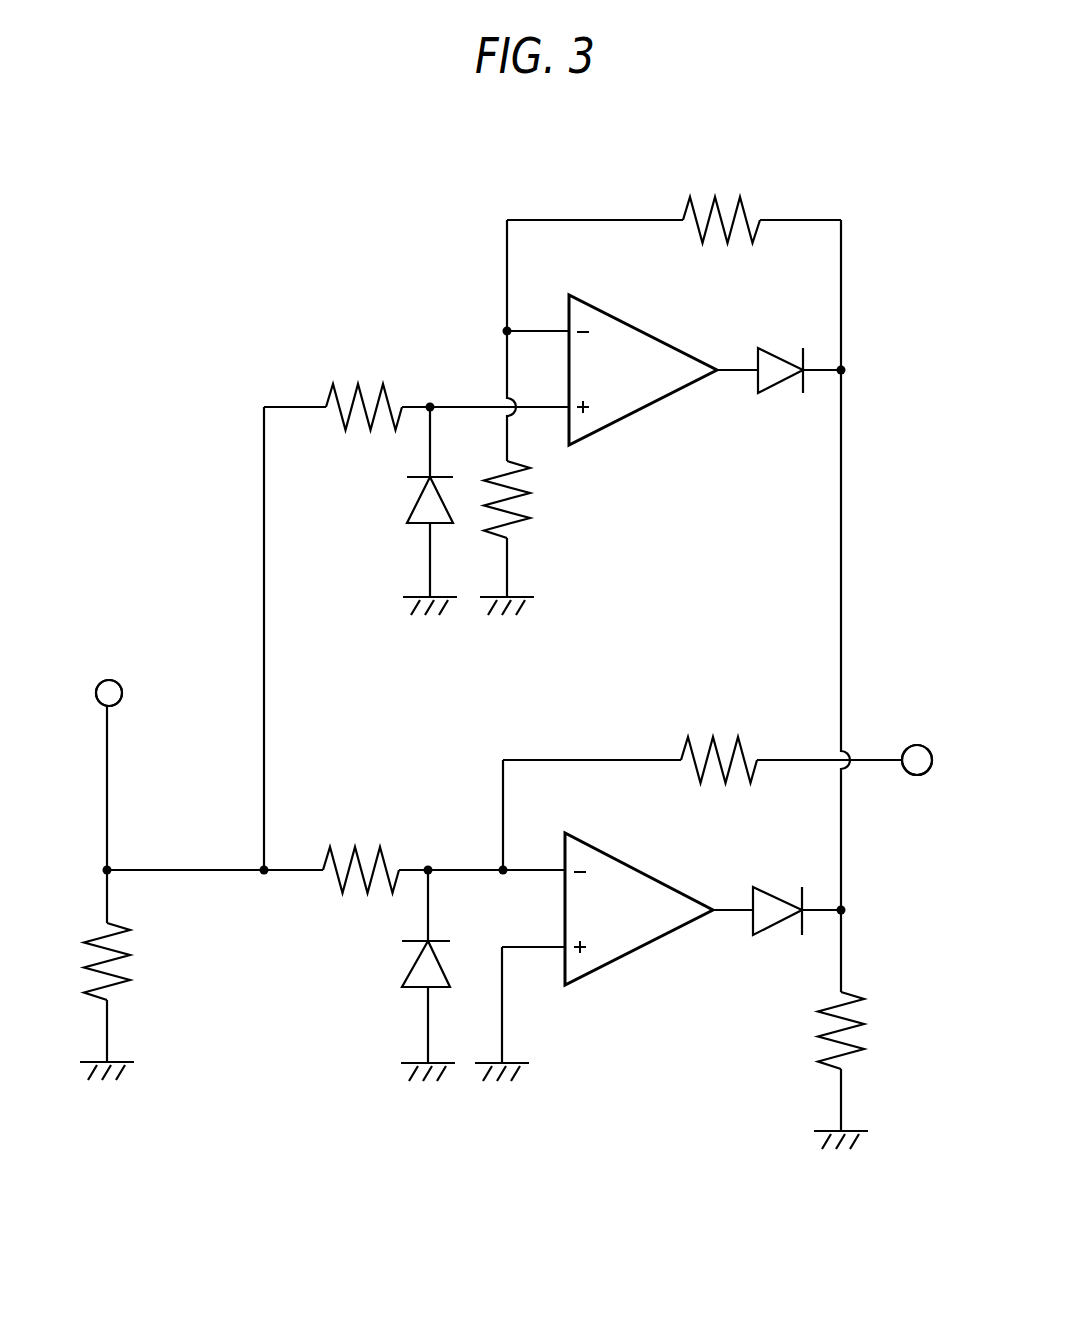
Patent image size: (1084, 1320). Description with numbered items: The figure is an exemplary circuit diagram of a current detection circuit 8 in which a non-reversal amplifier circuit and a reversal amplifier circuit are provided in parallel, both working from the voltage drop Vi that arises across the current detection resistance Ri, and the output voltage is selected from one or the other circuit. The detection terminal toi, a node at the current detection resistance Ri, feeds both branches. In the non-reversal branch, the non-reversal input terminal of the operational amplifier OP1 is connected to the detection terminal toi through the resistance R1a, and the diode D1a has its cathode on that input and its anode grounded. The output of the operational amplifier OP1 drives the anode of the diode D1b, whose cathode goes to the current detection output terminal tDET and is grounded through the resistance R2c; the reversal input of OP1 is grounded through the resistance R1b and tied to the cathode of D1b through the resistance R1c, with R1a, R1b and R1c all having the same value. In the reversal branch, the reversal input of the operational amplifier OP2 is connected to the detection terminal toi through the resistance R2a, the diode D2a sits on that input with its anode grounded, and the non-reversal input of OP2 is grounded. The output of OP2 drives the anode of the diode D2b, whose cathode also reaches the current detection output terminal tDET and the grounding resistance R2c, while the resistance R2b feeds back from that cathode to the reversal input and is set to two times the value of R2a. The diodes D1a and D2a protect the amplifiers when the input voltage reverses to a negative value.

The detection circuit 8 is at (138, 357).
The resistance R1a is at (364, 391).
The resistance R1b is at (532, 499).
The resistance R1c is at (721, 205).
The diode D1a is at (405, 500).
The diode D1b is at (781, 356).
The operational amplifier OP1 is at (666, 312).
The resistance R2a is at (361, 855).
The resistance R2b is at (719, 744).
The resistance R2c is at (864, 1030).
The diode D2a is at (401, 964).
The diode D2b is at (777, 897).
The operational amplifier OP2 is at (640, 872).
The current detection resistance Ri is at (121, 961).
The input voltage Vi is at (109, 678).
The detection terminal toi is at (124, 690).
The current detection output terminal tDET is at (953, 733).